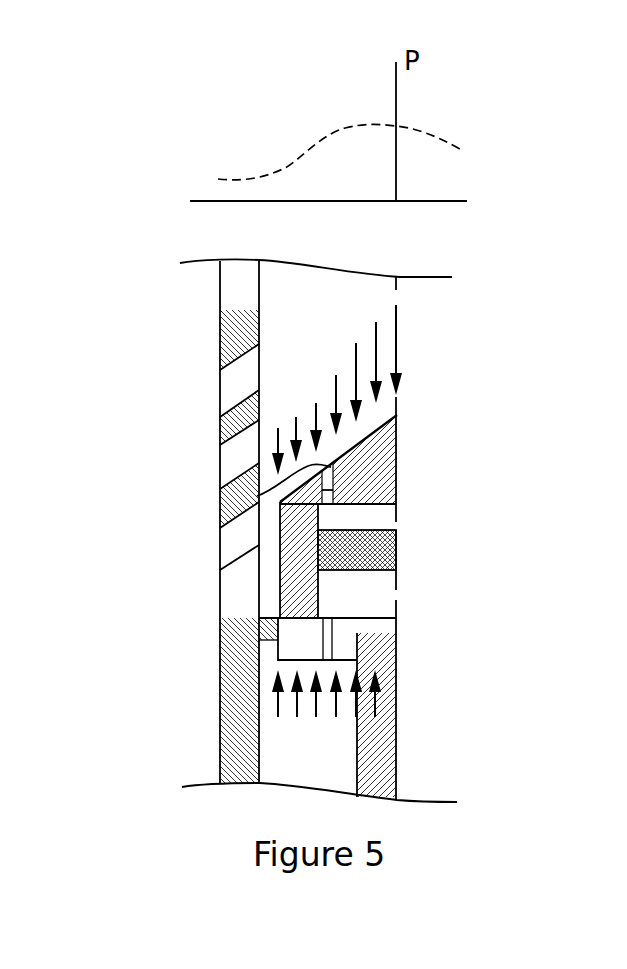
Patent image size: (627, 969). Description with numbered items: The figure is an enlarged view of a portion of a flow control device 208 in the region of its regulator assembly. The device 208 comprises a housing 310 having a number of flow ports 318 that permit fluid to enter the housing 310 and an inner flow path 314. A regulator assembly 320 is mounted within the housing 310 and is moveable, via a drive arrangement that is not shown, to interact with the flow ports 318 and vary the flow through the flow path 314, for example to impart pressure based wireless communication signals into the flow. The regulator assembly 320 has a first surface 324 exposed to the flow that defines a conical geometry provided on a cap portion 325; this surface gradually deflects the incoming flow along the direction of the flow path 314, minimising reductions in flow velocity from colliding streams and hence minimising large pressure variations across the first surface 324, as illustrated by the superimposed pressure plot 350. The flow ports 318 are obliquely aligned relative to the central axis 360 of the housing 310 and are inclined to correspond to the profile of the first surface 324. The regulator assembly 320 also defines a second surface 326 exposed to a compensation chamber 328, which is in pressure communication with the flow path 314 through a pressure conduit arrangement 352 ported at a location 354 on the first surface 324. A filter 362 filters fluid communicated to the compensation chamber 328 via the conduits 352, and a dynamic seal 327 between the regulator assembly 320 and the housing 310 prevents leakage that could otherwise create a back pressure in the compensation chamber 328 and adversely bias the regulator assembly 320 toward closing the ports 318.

The flow control device 208 is at (498, 249).
The housing 310 is at (235, 587).
The inner flow path 314 is at (337, 378).
The flow ports 318 is at (243, 449).
The regulator assembly 320 is at (424, 547).
The first surface 324 is at (391, 405).
The cap portion 325 is at (396, 461).
The second surface 326 is at (346, 666).
The dynamic seal 327 is at (276, 626).
The compensation chamber 328 is at (326, 718).
The pressure plot 350 is at (309, 123).
The pressure conduit arrangement 352 is at (323, 490).
The port location 354 is at (258, 494).
The central axis 360 is at (396, 287).
The filter 362 is at (337, 549).